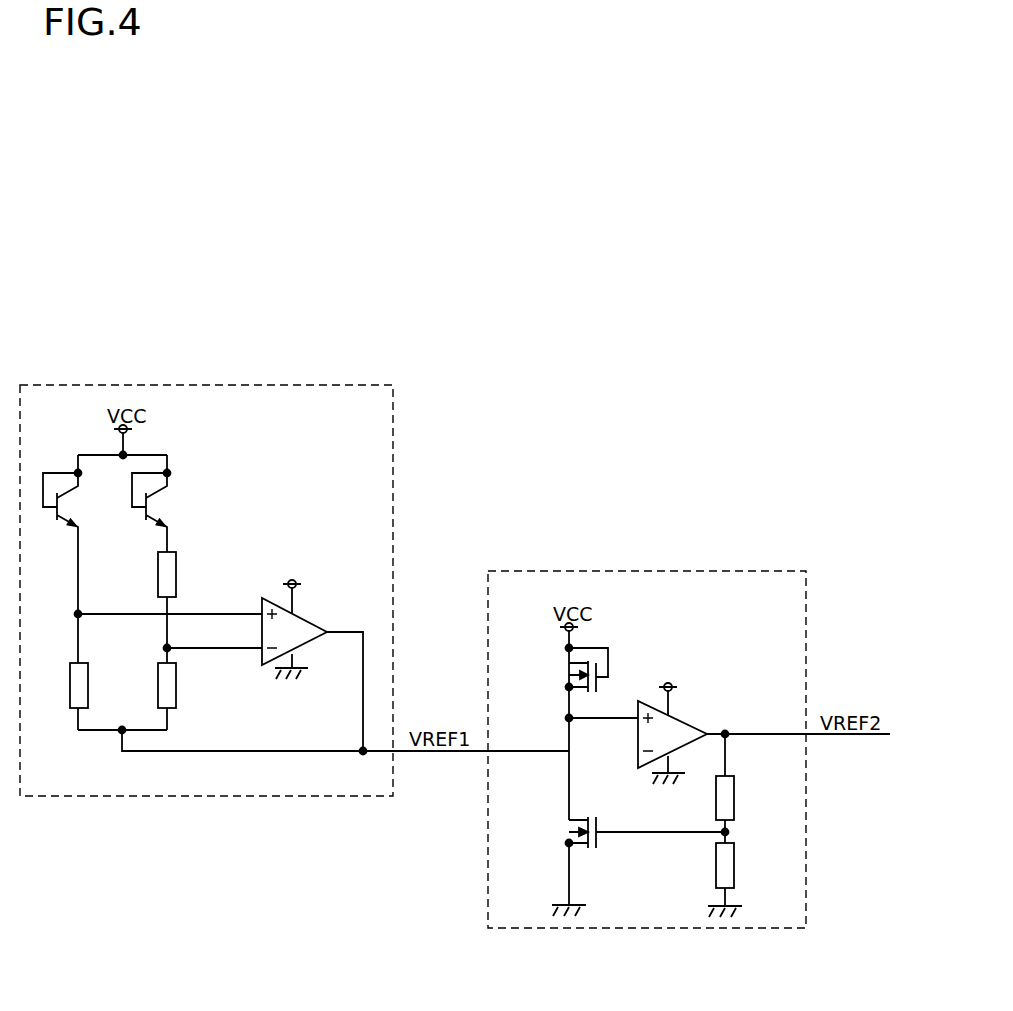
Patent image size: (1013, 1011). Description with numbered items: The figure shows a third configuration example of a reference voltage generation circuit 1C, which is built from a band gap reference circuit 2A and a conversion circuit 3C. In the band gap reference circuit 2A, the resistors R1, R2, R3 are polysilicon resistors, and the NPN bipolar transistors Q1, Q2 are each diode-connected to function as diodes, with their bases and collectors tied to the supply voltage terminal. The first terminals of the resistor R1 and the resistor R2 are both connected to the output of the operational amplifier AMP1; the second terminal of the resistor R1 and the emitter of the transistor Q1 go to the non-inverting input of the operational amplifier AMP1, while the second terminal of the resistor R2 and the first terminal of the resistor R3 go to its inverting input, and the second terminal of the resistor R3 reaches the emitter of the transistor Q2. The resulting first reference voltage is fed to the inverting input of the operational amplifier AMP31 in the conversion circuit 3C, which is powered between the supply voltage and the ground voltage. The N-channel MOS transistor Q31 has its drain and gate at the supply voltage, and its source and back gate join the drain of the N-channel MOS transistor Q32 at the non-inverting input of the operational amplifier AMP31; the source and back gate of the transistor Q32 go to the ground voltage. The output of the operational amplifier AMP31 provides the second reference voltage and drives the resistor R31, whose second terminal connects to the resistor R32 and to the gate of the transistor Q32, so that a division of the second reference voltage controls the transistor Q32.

The reference voltage generation circuit 1C is at (460, 305).
The band gap reference circuit 2A is at (210, 385).
The conversion circuit 3C is at (646, 571).
The NPN bipolar transistor Q1 is at (85, 505).
The NPN bipolar transistor Q2 is at (174, 505).
The resistor R1 is at (89, 686).
The resistor R2 is at (177, 686).
The resistor R3 is at (177, 575).
The operational amplifier AMP1 is at (317, 623).
The N-channel MOS transistor Q31 is at (559, 682).
The N-channel MOS transistor Q32 is at (559, 832).
The operational amplifier AMP31 is at (693, 725).
The resistor R31 is at (736, 798).
The resistor R32 is at (736, 865).